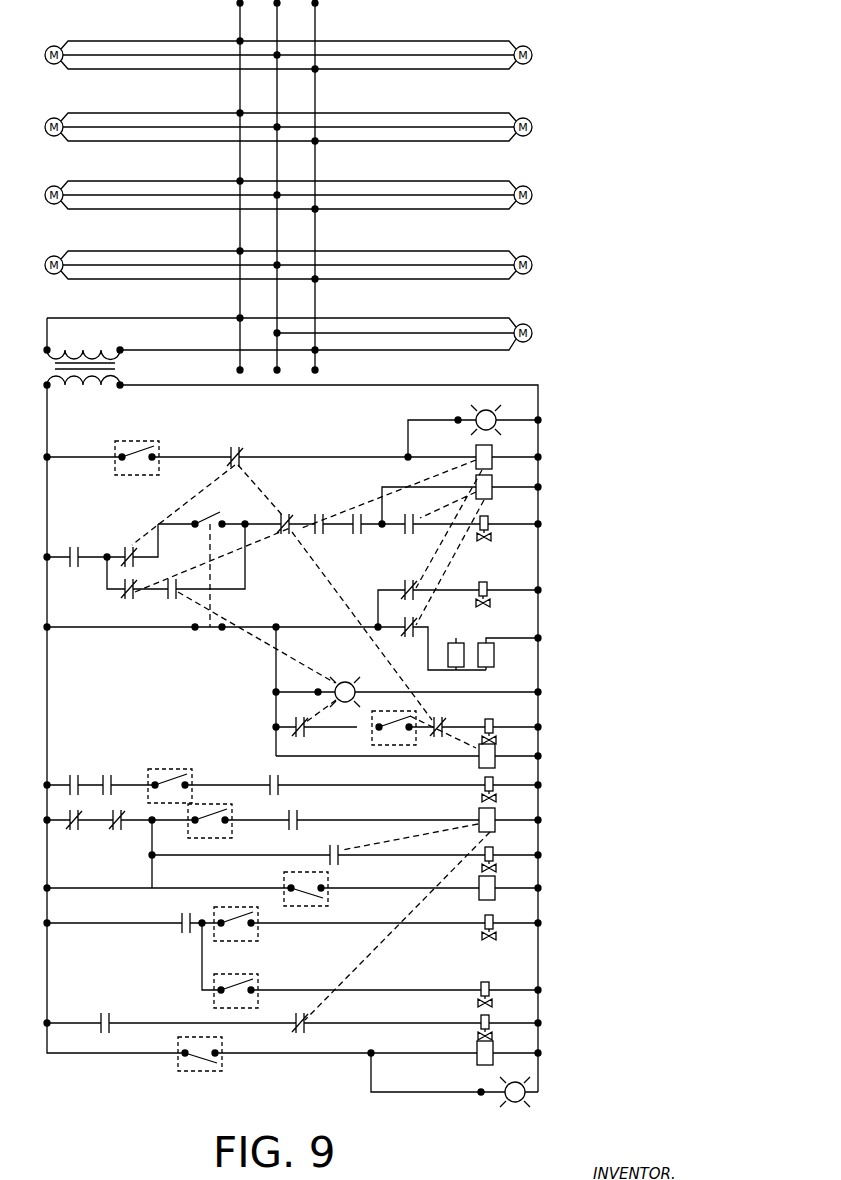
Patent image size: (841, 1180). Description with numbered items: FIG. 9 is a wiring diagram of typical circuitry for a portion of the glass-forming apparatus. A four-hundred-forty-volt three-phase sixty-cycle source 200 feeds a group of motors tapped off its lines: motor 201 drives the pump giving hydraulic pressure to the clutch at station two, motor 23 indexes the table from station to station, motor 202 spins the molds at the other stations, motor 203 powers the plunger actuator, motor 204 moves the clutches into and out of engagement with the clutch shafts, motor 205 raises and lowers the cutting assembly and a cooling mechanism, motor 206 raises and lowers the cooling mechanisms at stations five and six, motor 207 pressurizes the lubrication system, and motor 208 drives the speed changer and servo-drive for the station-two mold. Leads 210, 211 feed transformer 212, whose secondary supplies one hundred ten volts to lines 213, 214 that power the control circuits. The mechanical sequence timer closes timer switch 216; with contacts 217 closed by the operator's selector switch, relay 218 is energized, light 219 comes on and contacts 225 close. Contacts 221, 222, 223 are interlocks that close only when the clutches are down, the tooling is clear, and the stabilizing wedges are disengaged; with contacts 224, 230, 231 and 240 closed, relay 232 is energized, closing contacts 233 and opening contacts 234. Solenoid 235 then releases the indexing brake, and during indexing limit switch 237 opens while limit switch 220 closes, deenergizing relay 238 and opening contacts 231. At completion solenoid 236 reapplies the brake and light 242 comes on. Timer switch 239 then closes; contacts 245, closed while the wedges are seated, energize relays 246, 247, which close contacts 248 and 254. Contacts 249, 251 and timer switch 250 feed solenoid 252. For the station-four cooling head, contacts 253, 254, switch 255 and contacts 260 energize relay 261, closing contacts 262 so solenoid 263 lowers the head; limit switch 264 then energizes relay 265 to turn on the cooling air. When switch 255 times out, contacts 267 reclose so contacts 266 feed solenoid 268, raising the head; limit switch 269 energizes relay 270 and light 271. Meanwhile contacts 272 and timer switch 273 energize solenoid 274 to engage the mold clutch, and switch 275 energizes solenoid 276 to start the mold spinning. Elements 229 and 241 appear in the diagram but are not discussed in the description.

The electrical source 200 is at (320, 6).
The motor 201 is at (56, 42).
The motor 23 is at (56, 115).
The motor 202 is at (56, 183).
The motor 203 is at (56, 253).
The motor 204 is at (524, 321).
The motor 205 is at (521, 44).
The motor 206 is at (521, 115).
The motor 207 is at (523, 182).
The motor 208 is at (523, 252).
The lead 210 is at (222, 322).
The lead 211 is at (222, 352).
The transformer 212 is at (100, 340).
The line 213 is at (49, 417).
The line 214 is at (418, 383).
The timer switch 216 is at (140, 440).
The contacts 217 is at (238, 448).
The relay 218 is at (491, 453).
The light 219 is at (476, 411).
The limit switch 220 is at (232, 503).
The contacts 221 is at (286, 512).
The contacts 222 is at (320, 505).
The contacts 223 is at (357, 512).
The contacts 224 is at (72, 545).
The contacts 225 is at (128, 598).
The contact 229 is at (296, 722).
The contacts 230 is at (126, 545).
The contacts 231 is at (185, 610).
The relay 232 is at (488, 486).
The contacts 233 is at (405, 514).
The contacts 234 is at (418, 590).
The solenoid 235 is at (490, 520).
The solenoid 236 is at (502, 574).
The limit switch 237 is at (212, 632).
The relay 238 is at (498, 757).
The timer switch 239 is at (372, 745).
The contacts 240 is at (442, 718).
The solenoid valve 241 is at (500, 713).
The light 242 is at (345, 682).
The contacts 245 is at (416, 622).
The relay 246 is at (462, 636).
The relay 247 is at (486, 643).
The contacts 248 is at (110, 773).
The contacts 249 is at (74, 773).
The timer switch 250 is at (184, 769).
The contacts 251 is at (272, 773).
The solenoid 252 is at (486, 782).
The contacts 253 is at (74, 830).
The contacts 254 is at (118, 830).
The switch 255 is at (234, 834).
The contacts 260 is at (296, 810).
The relay 261 is at (480, 814).
The contacts 262 is at (334, 846).
The solenoid 263 is at (492, 853).
The limit switch 264 is at (283, 884).
The relay 265 is at (478, 893).
The contacts 266 is at (104, 1014).
The contacts 267 is at (302, 1014).
The solenoid 268 is at (481, 1016).
The limit switch 269 is at (179, 1046).
The relay 270 is at (477, 1050).
The light 271 is at (504, 1098).
The contacts 272 is at (184, 918).
The timer switch 273 is at (258, 940).
The solenoid 274 is at (492, 919).
The switch 275 is at (258, 977).
The solenoid 276 is at (482, 982).